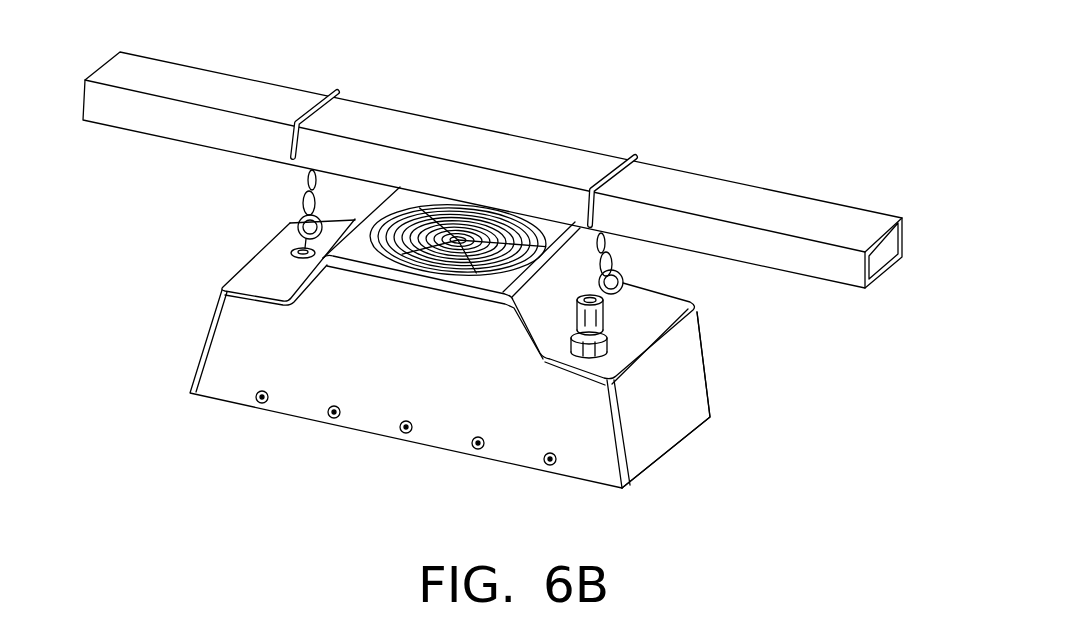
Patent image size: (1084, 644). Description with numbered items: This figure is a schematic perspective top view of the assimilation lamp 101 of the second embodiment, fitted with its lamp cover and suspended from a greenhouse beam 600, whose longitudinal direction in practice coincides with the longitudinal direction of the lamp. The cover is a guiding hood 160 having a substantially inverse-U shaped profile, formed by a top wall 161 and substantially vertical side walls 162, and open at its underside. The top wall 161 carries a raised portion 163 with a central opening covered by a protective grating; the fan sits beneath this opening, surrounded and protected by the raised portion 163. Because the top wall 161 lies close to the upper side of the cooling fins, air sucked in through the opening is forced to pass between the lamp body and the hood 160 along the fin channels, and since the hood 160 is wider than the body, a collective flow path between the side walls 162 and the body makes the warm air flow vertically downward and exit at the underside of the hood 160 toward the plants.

The assimilation lamp 101 is at (463, 348).
The guiding hood 160 is at (258, 343).
The top wall 161 is at (273, 270).
The side walls 162 is at (663, 399).
The raised portion 163 is at (565, 285).
The greenhouse beam 600 is at (740, 195).